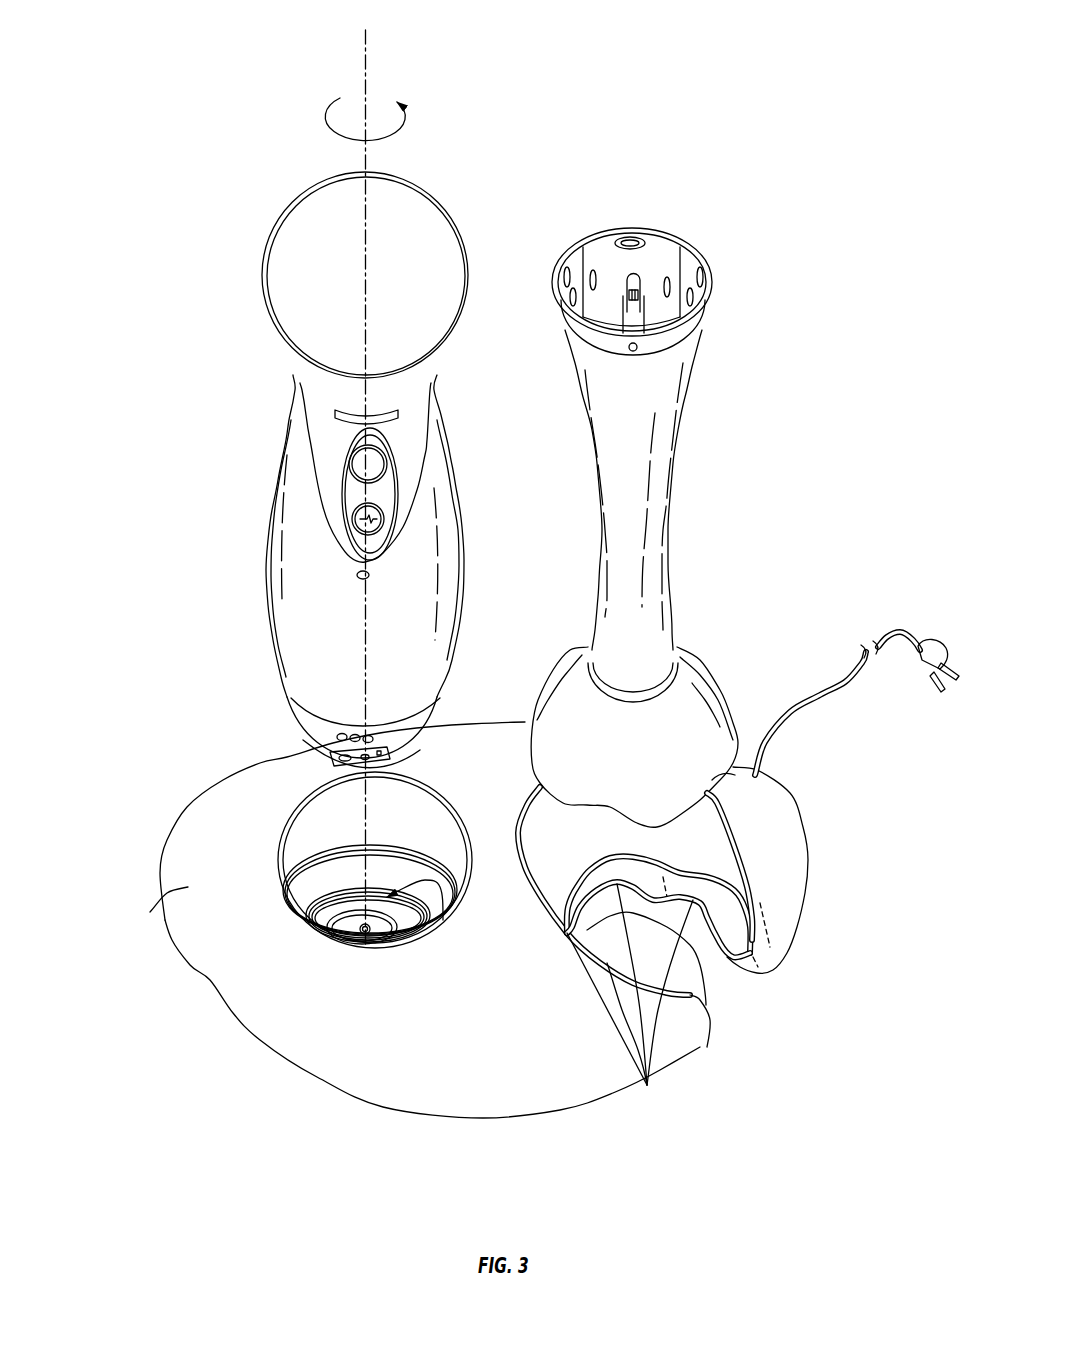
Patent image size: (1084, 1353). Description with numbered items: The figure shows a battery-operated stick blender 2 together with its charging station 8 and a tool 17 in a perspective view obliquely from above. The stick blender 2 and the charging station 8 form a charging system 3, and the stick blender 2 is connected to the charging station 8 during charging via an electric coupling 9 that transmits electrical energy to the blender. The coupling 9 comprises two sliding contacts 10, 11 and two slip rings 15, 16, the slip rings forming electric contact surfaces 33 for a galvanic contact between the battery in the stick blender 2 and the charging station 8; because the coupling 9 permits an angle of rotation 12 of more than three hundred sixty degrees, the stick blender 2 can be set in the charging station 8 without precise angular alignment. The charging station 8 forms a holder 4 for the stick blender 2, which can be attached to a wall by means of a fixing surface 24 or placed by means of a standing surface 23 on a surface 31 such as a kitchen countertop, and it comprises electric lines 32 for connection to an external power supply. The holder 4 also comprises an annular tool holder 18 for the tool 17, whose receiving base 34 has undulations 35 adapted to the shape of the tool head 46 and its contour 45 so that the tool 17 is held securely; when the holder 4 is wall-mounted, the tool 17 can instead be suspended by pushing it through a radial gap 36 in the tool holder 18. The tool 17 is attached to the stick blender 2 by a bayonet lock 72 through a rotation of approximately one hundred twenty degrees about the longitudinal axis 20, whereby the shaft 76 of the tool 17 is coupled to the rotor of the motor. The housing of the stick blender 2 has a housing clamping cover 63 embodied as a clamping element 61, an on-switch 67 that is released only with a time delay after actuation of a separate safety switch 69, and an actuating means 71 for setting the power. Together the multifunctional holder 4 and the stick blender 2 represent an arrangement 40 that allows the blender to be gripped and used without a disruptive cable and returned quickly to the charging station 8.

The stick blender 2 is at (280, 598).
The charging system 3 is at (177, 718).
The holder 4 is at (505, 1093).
The charging station 8 is at (150, 912).
The electric coupling 9 is at (328, 908).
The sliding contact 10 is at (317, 922).
The sliding contact 11 is at (350, 908).
The angle of rotation 12 is at (393, 136).
The slip ring 15 is at (390, 920).
The slip ring 16 is at (366, 935).
The tool 17 is at (653, 560).
The tool holder 18 is at (718, 852).
The longitudinal axis 20 is at (366, 64).
The standing surface 23 is at (667, 1073).
The fixing surface 24 is at (478, 720).
The surface 31 is at (857, 926).
The electric lines 32 is at (810, 697).
The electric contact surfaces 33 is at (443, 920).
The receiving base 34 is at (730, 923).
The undulations 35 is at (647, 1085).
The radial gap 36 is at (727, 980).
The arrangement 40 is at (147, 530).
The contour 45 is at (690, 807).
The tool head 46 is at (693, 703).
The clamping element 61 is at (285, 290).
The housing clamping cover 63 is at (350, 276).
The on-switch 67 is at (367, 463).
The safety switch 69 is at (348, 505).
The actuating means 71 is at (382, 408).
The bayonet lock 72 is at (335, 749).
The shaft 76 is at (641, 278).